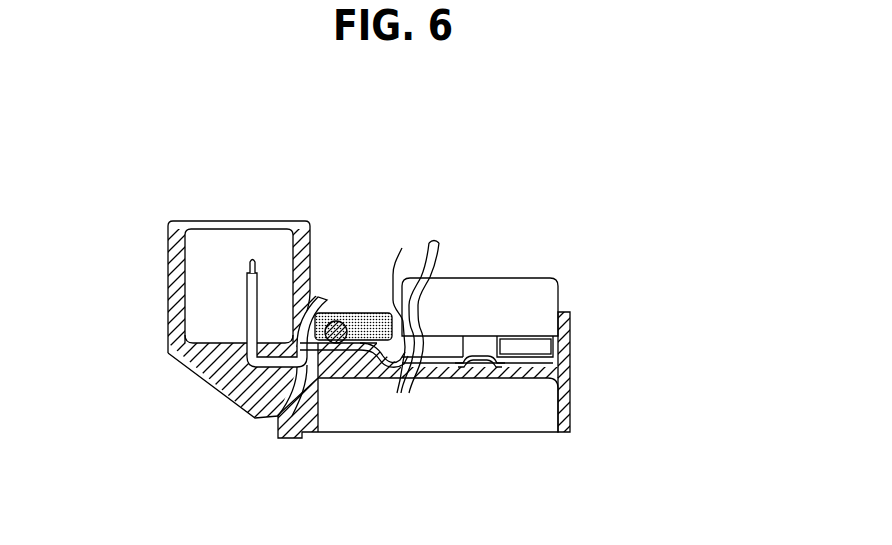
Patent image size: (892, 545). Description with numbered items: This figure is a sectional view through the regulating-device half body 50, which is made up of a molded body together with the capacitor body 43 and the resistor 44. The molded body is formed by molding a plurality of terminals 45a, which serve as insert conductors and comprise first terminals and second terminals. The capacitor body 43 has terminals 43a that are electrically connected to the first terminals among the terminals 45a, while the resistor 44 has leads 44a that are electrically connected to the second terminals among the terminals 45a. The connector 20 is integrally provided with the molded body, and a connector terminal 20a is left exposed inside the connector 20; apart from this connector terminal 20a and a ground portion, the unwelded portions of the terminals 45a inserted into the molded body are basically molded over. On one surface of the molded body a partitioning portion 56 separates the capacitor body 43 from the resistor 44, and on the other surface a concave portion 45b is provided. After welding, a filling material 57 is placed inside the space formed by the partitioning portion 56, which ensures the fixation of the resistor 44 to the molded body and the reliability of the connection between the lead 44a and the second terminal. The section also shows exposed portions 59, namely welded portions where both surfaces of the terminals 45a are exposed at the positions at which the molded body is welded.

The connector 20 is at (170, 280).
The connector terminal 20a is at (247, 268).
The resistor 44 is at (337, 312).
The lead 44a is at (350, 312).
The filling material 57 is at (365, 312).
The partitioning portion 56 is at (397, 272).
The exposed portion 59 is at (262, 420).
The regulating-device half body 50 is at (482, 182).
The capacitor body 43 is at (535, 277).
The terminal 43a is at (487, 336).
The terminal 45a is at (372, 378).
The concave portion 45b is at (552, 405).